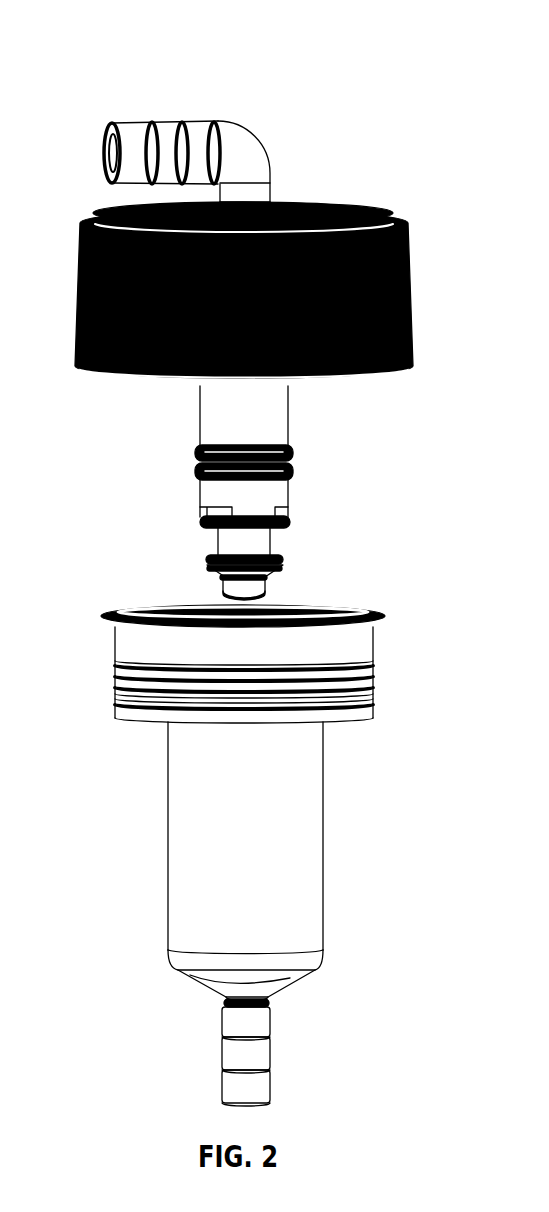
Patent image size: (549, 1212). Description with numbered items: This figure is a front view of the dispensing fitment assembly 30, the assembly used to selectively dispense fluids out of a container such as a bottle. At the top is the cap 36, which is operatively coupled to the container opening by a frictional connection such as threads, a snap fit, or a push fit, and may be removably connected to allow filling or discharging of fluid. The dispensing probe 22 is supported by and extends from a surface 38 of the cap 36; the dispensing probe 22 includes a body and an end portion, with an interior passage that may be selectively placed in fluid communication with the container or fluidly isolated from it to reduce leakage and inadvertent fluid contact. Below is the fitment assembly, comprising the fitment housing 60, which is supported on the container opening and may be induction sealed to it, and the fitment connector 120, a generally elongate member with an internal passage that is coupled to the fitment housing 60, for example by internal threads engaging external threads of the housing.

The dispensing fitment assembly 30 is at (247, 82).
The surface 38 is at (240, 147).
The cap 36 is at (78, 232).
The dispensing probe 22 is at (212, 417).
The fitment housing 60 is at (143, 710).
The fitment connector 120 is at (232, 986).